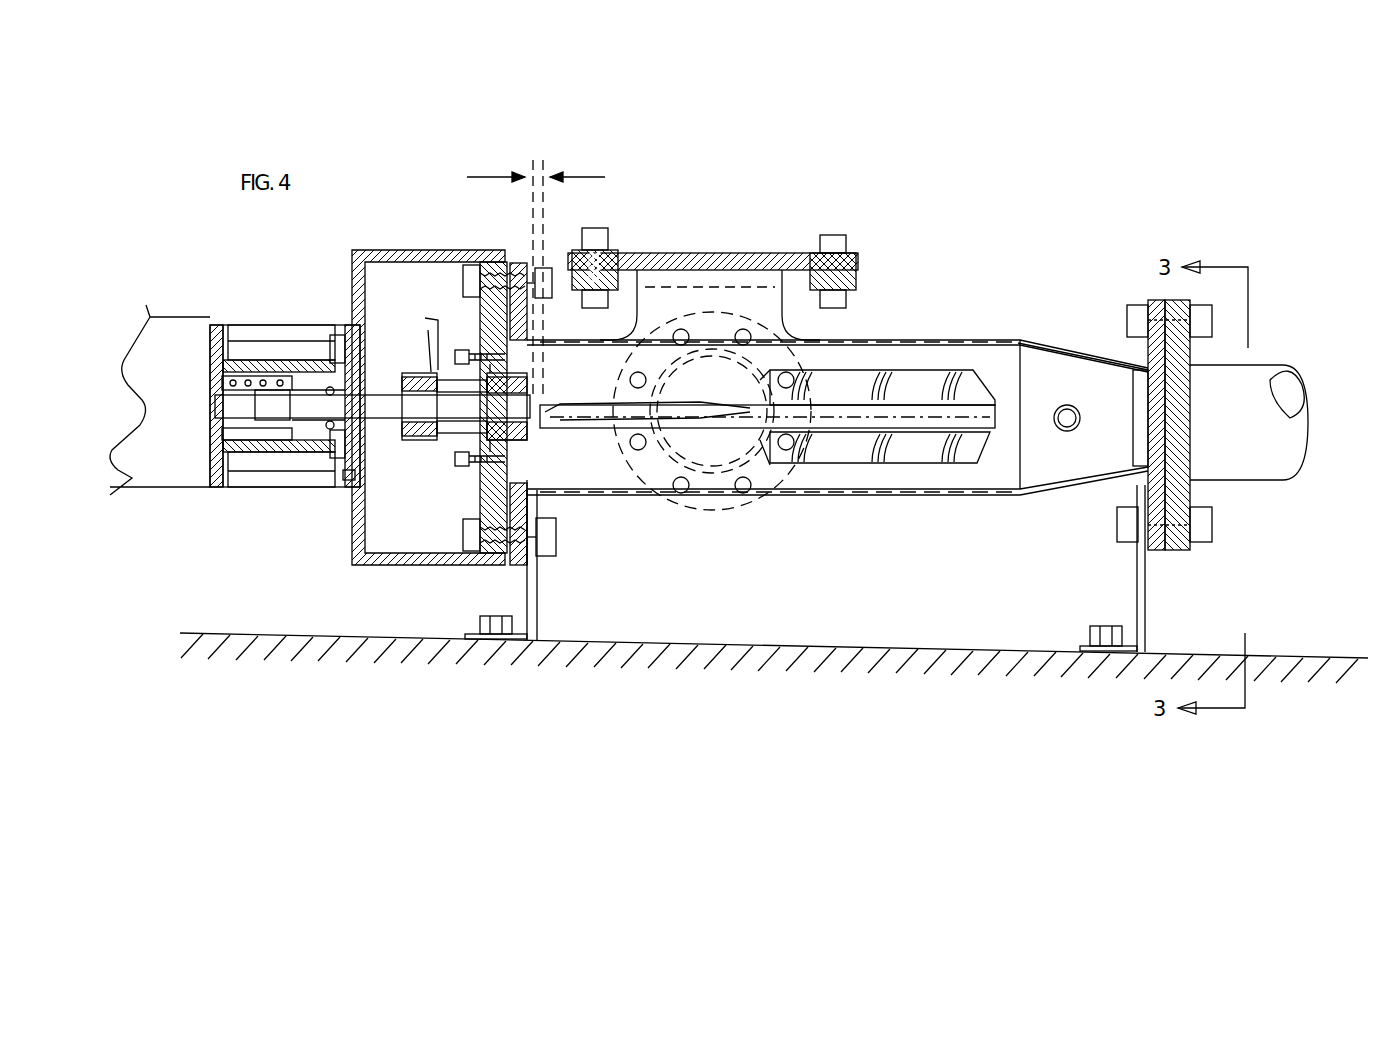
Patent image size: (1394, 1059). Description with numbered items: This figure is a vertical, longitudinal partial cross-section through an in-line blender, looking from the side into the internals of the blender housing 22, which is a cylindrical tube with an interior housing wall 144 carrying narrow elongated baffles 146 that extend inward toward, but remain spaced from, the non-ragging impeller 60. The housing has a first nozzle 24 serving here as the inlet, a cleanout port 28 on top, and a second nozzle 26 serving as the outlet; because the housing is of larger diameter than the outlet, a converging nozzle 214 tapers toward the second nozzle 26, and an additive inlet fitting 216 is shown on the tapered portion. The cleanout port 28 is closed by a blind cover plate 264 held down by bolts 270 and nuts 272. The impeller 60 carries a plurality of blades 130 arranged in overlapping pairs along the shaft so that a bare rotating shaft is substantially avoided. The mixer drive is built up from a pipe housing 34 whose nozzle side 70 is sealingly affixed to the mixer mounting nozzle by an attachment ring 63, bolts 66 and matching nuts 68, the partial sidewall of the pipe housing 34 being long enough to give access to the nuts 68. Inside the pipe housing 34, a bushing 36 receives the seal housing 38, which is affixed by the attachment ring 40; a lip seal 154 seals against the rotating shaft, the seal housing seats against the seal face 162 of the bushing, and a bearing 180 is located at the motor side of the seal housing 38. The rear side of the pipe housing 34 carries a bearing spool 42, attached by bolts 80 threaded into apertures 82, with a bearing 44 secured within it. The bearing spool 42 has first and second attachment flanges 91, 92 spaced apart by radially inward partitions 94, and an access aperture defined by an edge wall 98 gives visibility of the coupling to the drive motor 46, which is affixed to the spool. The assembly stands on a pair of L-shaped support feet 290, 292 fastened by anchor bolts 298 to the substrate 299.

The blender housing 22 is at (955, 340).
The first nozzle 24 is at (722, 462).
The second nozzle 26 is at (1148, 345).
The cleanout port 28 is at (790, 280).
The pipe housing 34 is at (435, 250).
The bushing 36 is at (527, 432).
The seal housing 38 is at (438, 440).
The attachment ring 40 is at (462, 466).
The bearing spool 42 is at (230, 487).
The bearing 44 is at (318, 376).
The drive motor 46 is at (152, 490).
The non-ragging impeller 60 is at (597, 430).
The attachment ring 63 is at (524, 560).
The bolt 66 is at (548, 268).
The nut 68 is at (463, 280).
The nozzle side 70 is at (492, 262).
The bolts 80 is at (338, 335).
The apertures 82 is at (365, 300).
The first attachment flange 91 is at (345, 480).
The second attachment flange 92 is at (222, 325).
The radially inward partitions 94 is at (262, 325).
The edge wall 98 is at (240, 325).
The blades 130 is at (960, 372).
The interior housing wall 144 is at (895, 340).
The baffles 146 is at (985, 405).
The lip seal 154 is at (535, 345).
The seal face 162 is at (510, 455).
The bearing 180 is at (402, 416).
The converging nozzle 214 is at (1062, 340).
The additive inlet fitting 216 is at (1067, 431).
The blind cover plate 264 is at (680, 253).
The bolts 270 is at (595, 228).
The nuts 272 is at (620, 262).
The support foot 290 is at (537, 605).
The support foot 292 is at (1147, 612).
The anchor bolts 298 is at (480, 622).
The substrate 299 is at (922, 648).